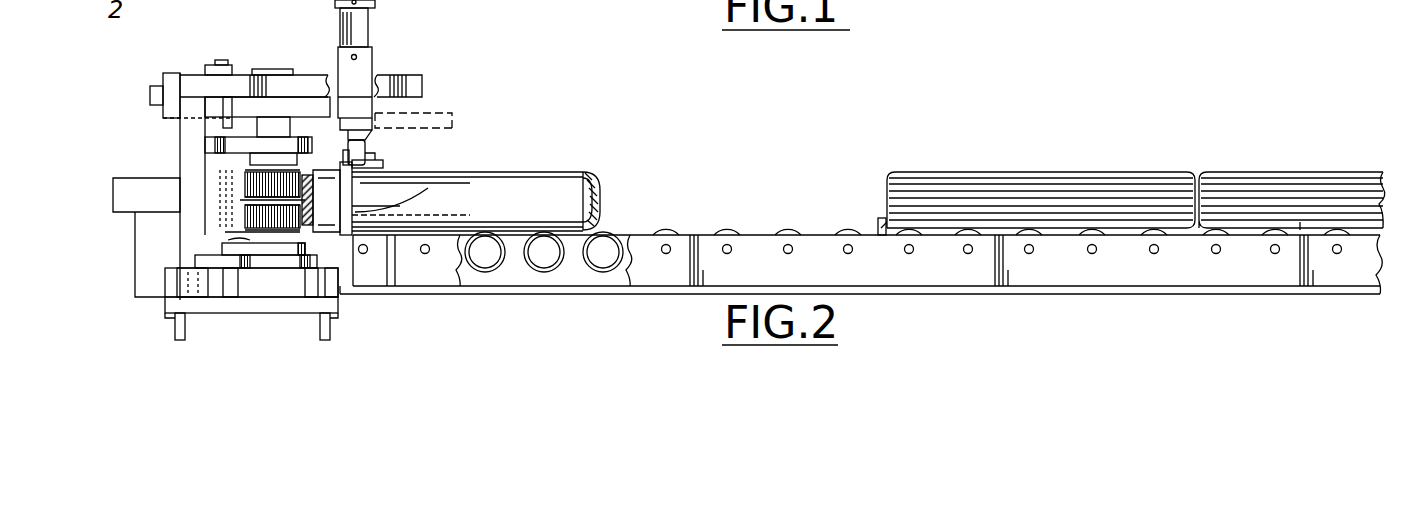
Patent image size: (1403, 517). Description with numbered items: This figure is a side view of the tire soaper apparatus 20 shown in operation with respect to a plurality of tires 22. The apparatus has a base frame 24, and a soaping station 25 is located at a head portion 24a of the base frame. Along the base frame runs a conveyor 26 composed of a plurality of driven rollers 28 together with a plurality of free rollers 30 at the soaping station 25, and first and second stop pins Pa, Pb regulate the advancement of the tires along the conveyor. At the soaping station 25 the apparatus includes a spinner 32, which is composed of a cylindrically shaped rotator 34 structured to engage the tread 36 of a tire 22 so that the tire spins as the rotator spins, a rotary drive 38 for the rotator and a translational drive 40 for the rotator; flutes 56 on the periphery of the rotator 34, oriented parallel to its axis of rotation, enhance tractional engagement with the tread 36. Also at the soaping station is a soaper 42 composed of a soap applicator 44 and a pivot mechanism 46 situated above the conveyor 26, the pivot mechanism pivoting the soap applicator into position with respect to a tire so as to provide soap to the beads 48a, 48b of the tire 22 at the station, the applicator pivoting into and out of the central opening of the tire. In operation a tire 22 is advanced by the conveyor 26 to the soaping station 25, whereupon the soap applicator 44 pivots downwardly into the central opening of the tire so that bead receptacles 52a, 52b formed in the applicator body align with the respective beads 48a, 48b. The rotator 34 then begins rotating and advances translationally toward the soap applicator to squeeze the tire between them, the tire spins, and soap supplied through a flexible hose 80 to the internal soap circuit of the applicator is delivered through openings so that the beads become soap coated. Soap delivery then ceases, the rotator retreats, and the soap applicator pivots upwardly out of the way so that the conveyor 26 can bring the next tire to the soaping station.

The tire soaper apparatus 20 is at (154, 70).
The tires 22 is at (1219, 170).
The base frame 24 is at (908, 297).
The head portion of the base frame 24a is at (449, 311).
The soaping station 25 is at (309, 69).
The conveyor 26 is at (763, 218).
The driven rollers 28 is at (604, 232).
The free rollers 30 is at (396, 245).
The spinner 32 is at (220, 237).
The cylindrically shaped rotator 34 is at (245, 214).
The tread 36 is at (601, 190).
The rotary drive 38 is at (281, 67).
The translational drive 40 is at (531, 187).
The soaper 42 is at (427, 88).
The soap applicator 44 is at (342, 232).
The pivot mechanism 46 is at (390, 58).
The upper bead 48a is at (341, 236).
The lower bead 48b is at (350, 240).
The upper bead receptacle 52a is at (356, 165).
The lower bead receptacle 52b is at (318, 224).
The flutes 56 is at (245, 220).
The flexible hose 80 is at (393, 205).
The first stop pin Pa is at (1303, 220).
The second stop pin Pb is at (878, 218).